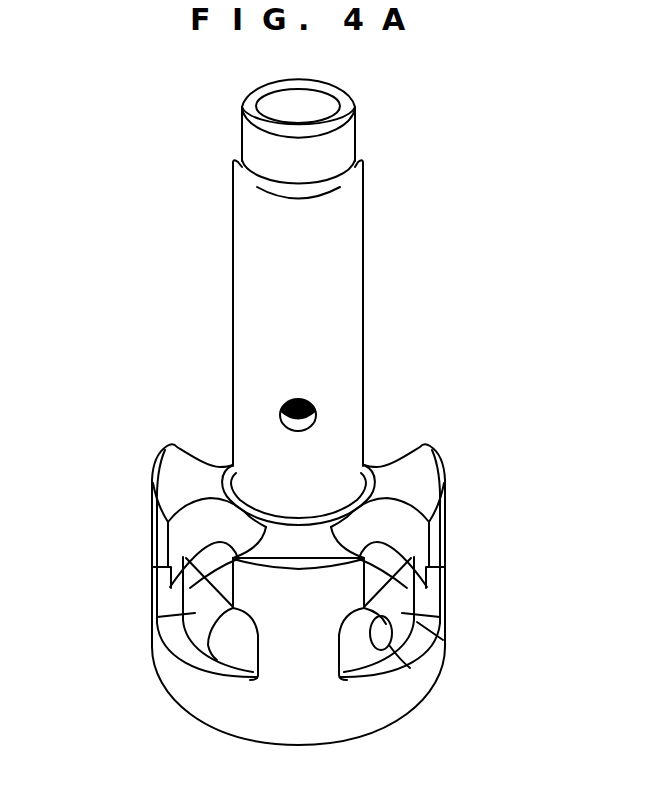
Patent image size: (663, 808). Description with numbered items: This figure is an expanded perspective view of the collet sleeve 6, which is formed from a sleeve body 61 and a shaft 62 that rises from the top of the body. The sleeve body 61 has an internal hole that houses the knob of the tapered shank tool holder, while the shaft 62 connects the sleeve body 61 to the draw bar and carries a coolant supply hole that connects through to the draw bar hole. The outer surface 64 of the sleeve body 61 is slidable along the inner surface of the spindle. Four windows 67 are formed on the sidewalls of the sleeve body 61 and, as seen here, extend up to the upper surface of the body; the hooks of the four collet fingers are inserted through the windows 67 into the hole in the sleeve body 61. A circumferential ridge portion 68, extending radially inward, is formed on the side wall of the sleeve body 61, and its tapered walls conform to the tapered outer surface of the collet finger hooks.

The collet sleeve 6 is at (141, 319).
The sleeve body 61 is at (477, 527).
The shaft 62 is at (336, 340).
The outer surface 64 is at (153, 554).
The windows 67 is at (193, 612).
The circumferential ridge portion 68 is at (385, 662).